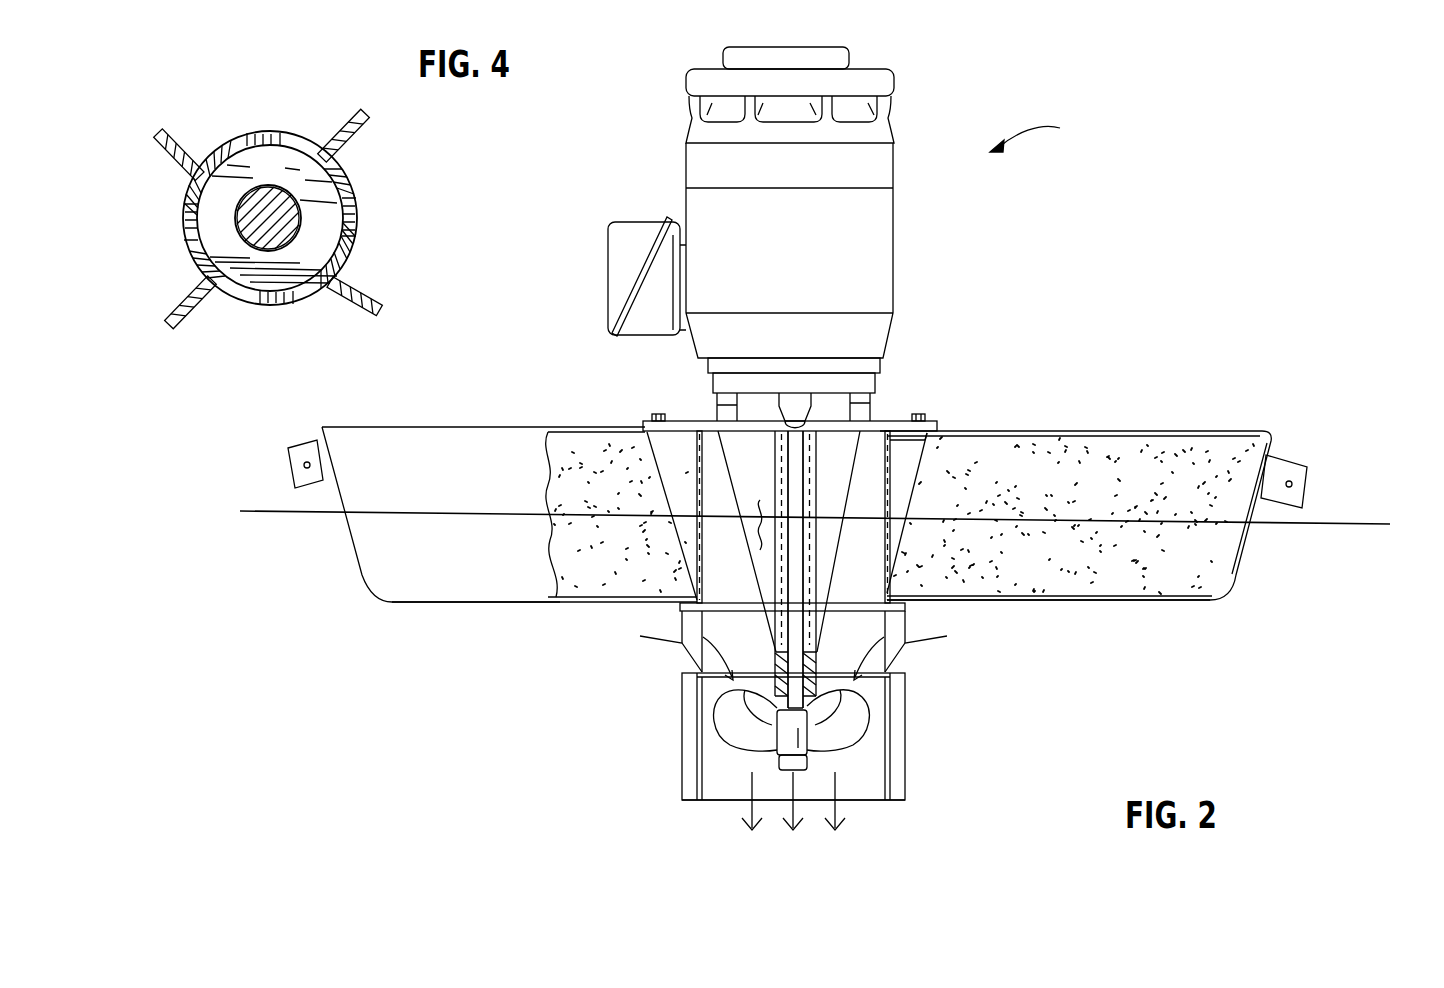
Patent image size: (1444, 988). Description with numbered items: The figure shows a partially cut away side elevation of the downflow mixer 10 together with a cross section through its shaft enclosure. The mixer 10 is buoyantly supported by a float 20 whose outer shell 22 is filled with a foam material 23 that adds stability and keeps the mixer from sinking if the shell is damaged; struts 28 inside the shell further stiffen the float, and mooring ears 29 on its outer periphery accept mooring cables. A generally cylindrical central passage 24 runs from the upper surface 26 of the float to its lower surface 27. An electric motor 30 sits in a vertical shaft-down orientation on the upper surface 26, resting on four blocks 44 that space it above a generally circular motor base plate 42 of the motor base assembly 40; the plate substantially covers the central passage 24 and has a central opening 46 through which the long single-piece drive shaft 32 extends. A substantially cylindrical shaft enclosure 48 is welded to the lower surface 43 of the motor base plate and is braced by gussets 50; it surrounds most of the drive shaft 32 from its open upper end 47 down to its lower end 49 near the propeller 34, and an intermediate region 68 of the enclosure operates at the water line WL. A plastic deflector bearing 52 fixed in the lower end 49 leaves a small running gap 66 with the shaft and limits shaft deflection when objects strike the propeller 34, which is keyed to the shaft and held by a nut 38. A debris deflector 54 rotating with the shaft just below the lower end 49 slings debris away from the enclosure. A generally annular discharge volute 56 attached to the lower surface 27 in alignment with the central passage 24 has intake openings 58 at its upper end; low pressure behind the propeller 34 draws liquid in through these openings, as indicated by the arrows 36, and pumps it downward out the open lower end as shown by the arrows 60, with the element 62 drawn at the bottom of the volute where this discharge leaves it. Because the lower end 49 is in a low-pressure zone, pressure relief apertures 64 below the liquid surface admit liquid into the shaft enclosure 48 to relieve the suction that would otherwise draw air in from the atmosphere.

In FIG. 2, the mixer 10 is at (1040, 133).
In FIG. 2, the float 20 is at (1108, 432).
In FIG. 2, the outer shell 22 is at (1190, 585).
In FIG. 2, the foam material 23 is at (1188, 452).
In FIG. 2, the central passage 24 is at (900, 467).
In FIG. 2, the upper surface 26 is at (568, 427).
In FIG. 2, the lower surface 27 is at (407, 604).
In FIG. 2, the struts 28 is at (933, 460).
In FIG. 2, the mooring ears 29 is at (1288, 468).
In FIG. 2, the electric motor 30 is at (878, 70).
In FIG. 4, the drive shaft 32 is at (300, 208).
In FIG. 2, the drive shaft 32 is at (797, 458).
In FIG. 2, the propeller 34 is at (735, 722).
In FIG. 2, the arrows 36 is at (655, 645).
In FIG. 2, the nut 38 is at (790, 742).
In FIG. 2, the motor base assembly 40 is at (881, 420).
In FIG. 2, the motor base plate 42 is at (698, 431).
In FIG. 2, the lower surface of the motor base plate 43 is at (834, 436).
In FIG. 2, the blocks 44 is at (860, 403).
In FIG. 2, the central opening 46 is at (757, 455).
In FIG. 2, the upper end of the shaft enclosure 47 is at (803, 438).
In FIG. 4, the shaft enclosure 48 is at (356, 250).
In FIG. 2, the shaft enclosure 48 is at (690, 617).
In FIG. 2, the lower end of the shaft enclosure 49 is at (823, 700).
In FIG. 4, the gussets 50 is at (192, 130).
In FIG. 2, the gussets 50 is at (830, 545).
In FIG. 4, the deflector bearing 52 is at (280, 160).
In FIG. 2, the deflector bearing 52 is at (745, 695).
In FIG. 2, the debris deflector 54 is at (830, 745).
In FIG. 2, the discharge volute 56 is at (897, 697).
In FIG. 2, the intake openings 58 is at (688, 610).
In FIG. 2, the arrows 60 is at (752, 832).
In FIG. 2, the outlet 62 is at (690, 802).
In FIG. 4, the pressure relief apertures 64 is at (265, 135).
In FIG. 4, the gap 66 is at (283, 193).
In FIG. 2, the intermediate region 68 is at (757, 505).
In FIG. 2, the water line WL is at (1355, 525).